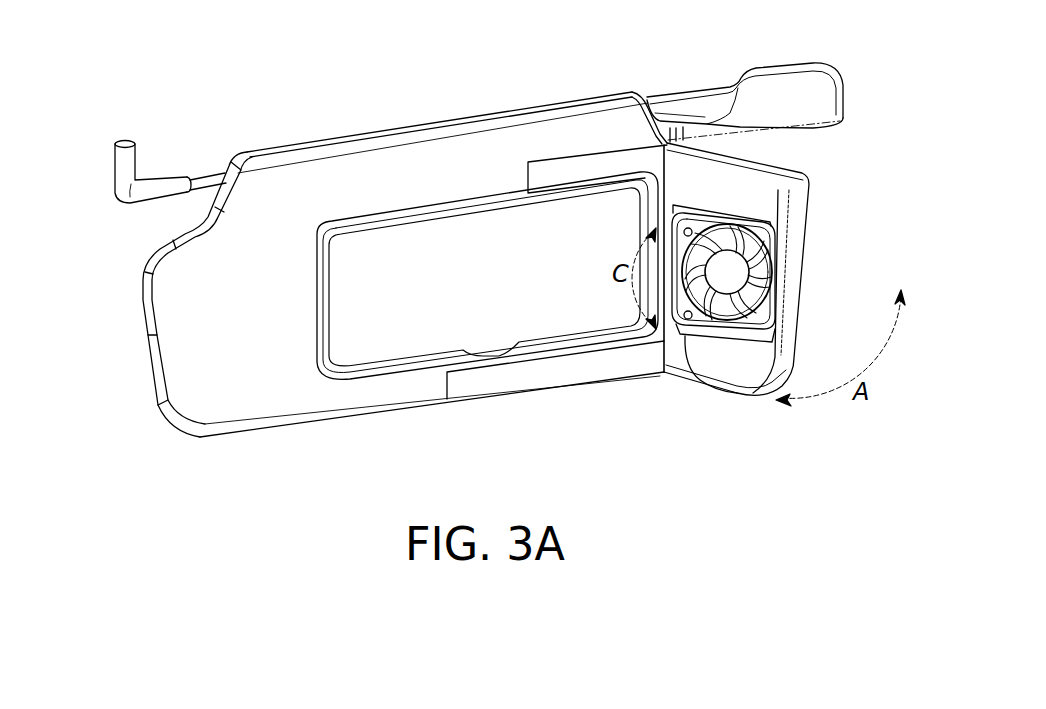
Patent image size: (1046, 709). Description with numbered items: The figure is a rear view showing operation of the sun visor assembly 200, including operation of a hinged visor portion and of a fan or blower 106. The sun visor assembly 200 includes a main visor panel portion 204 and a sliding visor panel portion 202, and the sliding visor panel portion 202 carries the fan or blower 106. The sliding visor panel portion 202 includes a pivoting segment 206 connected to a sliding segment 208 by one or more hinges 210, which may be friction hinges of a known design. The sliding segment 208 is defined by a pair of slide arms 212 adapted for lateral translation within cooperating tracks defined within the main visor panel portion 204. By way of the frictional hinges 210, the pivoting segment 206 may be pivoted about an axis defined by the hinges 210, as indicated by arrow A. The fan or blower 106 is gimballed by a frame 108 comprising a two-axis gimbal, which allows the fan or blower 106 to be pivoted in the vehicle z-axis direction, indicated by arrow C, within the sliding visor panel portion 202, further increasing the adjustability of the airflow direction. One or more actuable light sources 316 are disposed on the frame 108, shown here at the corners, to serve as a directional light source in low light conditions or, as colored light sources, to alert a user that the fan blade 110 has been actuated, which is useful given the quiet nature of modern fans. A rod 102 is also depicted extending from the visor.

The sun visor assembly 200 is at (300, 90).
The pivot rod 102 is at (202, 185).
The main visor panel portion 204 is at (157, 337).
The sliding segment 208 is at (627, 382).
The slide arms 212 is at (570, 170).
The hinges 210 is at (672, 177).
The pivoting segment 206 is at (773, 165).
The sliding visor panel portion 202 is at (662, 388).
The frame 108 is at (787, 343).
The actuable light sources 316 is at (770, 236).
The fan blade 110 is at (745, 273).
The fan or blower 106 is at (752, 207).